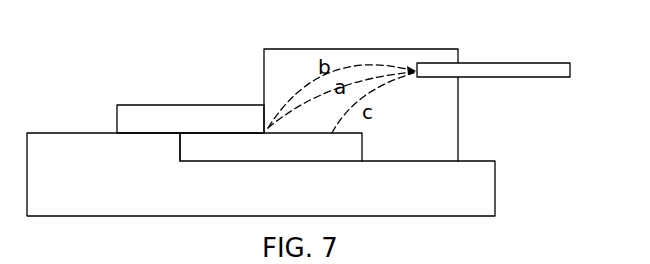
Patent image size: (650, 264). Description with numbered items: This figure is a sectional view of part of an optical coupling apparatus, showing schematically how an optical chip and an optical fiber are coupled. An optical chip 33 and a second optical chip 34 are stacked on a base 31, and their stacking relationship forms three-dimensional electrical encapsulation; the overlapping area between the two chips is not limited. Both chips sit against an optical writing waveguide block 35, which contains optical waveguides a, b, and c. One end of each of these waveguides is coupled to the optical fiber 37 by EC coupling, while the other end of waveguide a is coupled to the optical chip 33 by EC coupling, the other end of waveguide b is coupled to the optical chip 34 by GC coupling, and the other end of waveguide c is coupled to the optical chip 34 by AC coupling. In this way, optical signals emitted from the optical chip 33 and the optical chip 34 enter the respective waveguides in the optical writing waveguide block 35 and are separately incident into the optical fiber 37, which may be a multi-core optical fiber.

The substrate 31 is at (497, 197).
The optical chip 33 is at (168, 105).
The optical chip 34 is at (362, 150).
The optical writing waveguide block 35 is at (373, 49).
The optical fiber 37 is at (512, 63).